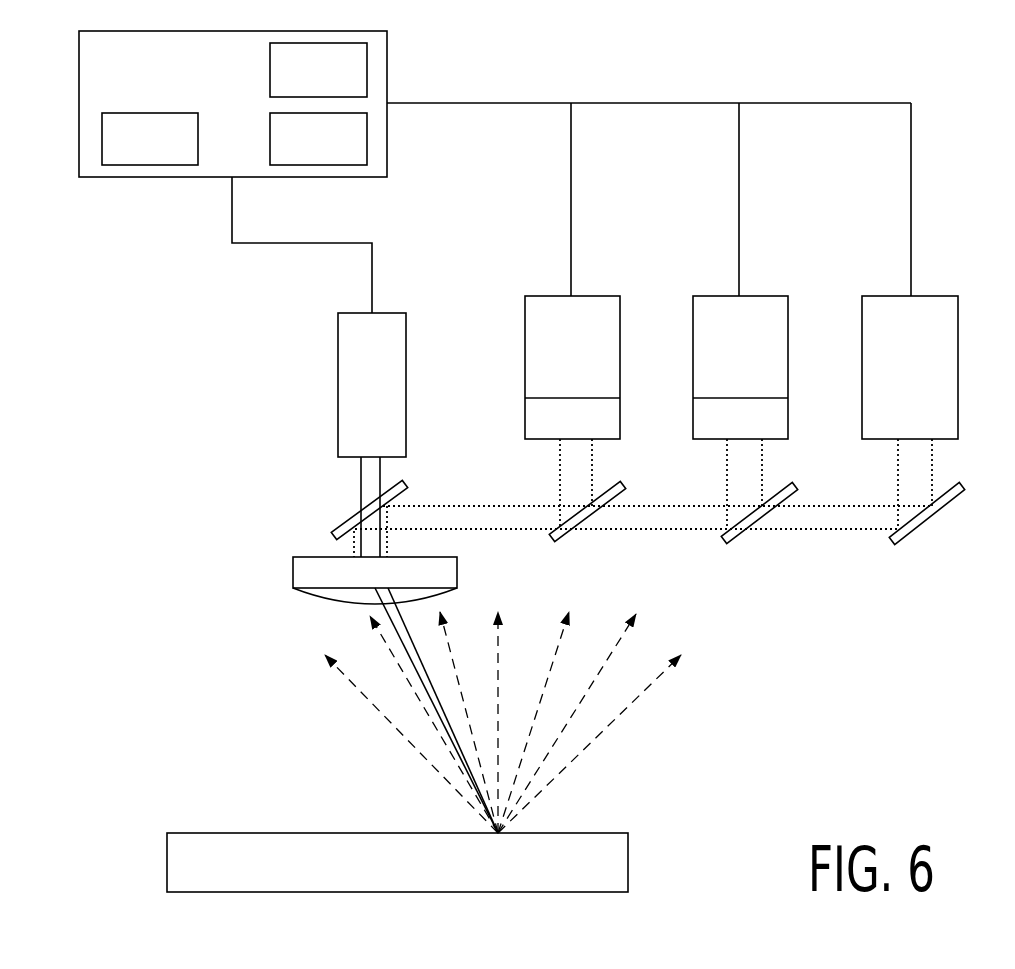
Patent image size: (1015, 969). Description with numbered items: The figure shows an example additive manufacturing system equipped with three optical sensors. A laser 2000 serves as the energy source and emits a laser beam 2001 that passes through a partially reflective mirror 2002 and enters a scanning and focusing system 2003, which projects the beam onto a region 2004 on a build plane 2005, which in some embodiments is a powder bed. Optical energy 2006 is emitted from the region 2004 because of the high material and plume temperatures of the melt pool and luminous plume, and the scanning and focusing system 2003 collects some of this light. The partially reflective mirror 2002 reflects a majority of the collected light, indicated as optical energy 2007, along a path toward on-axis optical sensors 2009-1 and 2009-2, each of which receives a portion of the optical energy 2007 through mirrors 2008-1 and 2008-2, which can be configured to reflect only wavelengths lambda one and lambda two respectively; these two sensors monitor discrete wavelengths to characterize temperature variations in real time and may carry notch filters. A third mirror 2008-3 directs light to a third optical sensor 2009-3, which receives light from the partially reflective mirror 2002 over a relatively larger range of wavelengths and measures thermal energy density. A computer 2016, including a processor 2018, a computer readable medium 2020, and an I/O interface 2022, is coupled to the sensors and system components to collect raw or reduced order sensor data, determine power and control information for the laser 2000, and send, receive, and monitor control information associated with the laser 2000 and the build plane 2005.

The laser 2000 is at (397, 394).
The laser beam 2001 is at (346, 484).
The partially reflective mirror 2002 is at (319, 527).
The scanning and focusing system 2003 is at (310, 572).
The region 2004 is at (470, 827).
The build plane 2005 is at (413, 878).
The optical energy 2006 is at (350, 706).
The optical energy 2007 is at (512, 517).
The mirror 2008-1 is at (557, 543).
The mirror 2008-2 is at (729, 544).
The mirror 2008-3 is at (897, 545).
The on-axis optical sensor 2009-1 is at (610, 366).
The on-axis optical sensor 2009-2 is at (778, 366).
The third optical sensor 2009-3 is at (948, 366).
The computer 2016 is at (143, 69).
The processor 2018 is at (177, 154).
The computer readable medium 2020 is at (345, 154).
The I/O interface 2022 is at (345, 83).